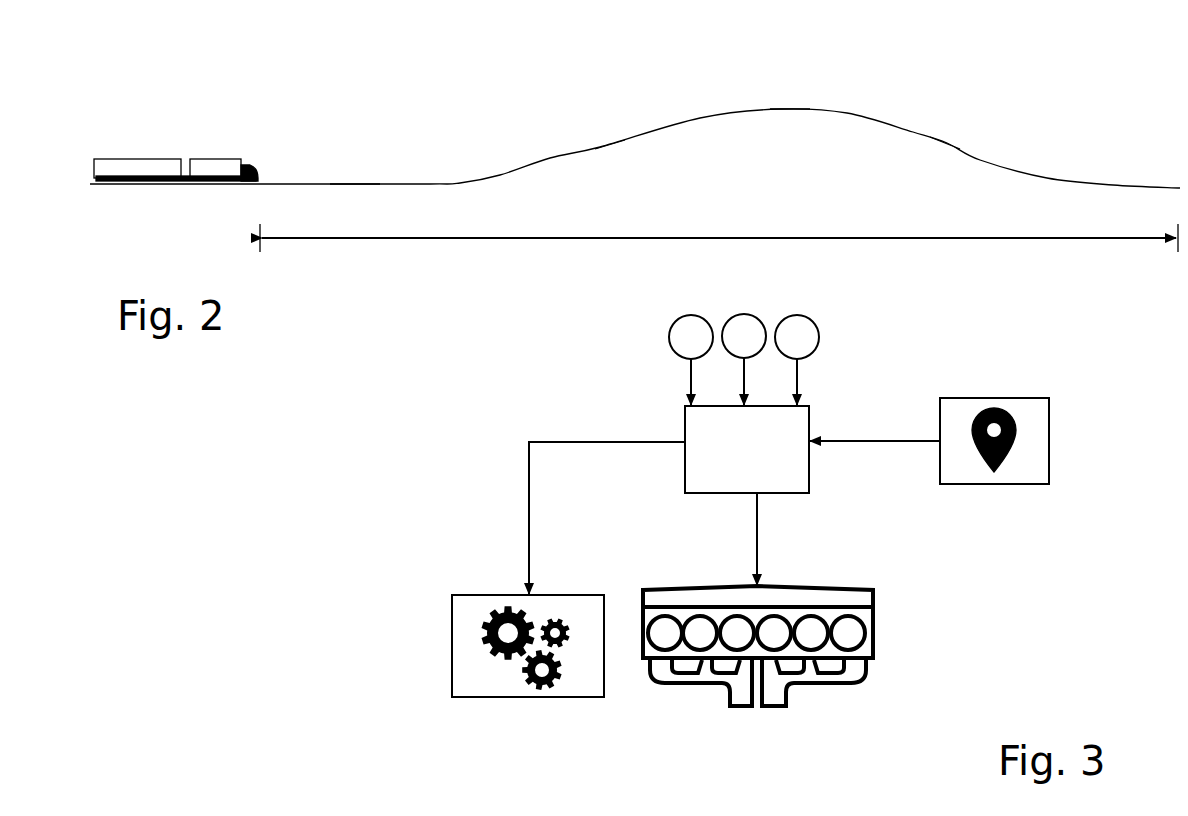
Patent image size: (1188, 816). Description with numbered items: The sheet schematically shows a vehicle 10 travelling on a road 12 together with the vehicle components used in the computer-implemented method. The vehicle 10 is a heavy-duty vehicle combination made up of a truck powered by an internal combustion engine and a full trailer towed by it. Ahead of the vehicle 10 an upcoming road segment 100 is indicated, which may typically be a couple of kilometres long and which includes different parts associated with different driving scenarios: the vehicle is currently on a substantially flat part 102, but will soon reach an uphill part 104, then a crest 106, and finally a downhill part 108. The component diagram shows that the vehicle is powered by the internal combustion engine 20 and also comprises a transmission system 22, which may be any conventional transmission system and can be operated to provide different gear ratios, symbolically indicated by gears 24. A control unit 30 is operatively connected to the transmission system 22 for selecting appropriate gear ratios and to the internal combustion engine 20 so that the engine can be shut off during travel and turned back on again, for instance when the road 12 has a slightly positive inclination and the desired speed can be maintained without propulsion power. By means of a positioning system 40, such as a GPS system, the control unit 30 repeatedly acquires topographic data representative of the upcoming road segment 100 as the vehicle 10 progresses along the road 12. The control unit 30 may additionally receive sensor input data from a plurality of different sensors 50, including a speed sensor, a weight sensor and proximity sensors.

In FIG. 2, the vehicle 10 is at (236, 155).
In FIG. 2, the road 12 is at (512, 88).
In FIG. 2, the upcoming road segment 100 is at (719, 231).
In FIG. 2, the flat part 102 is at (348, 183).
In FIG. 2, the uphill part 104 is at (610, 145).
In FIG. 2, the crest 106 is at (788, 109).
In FIG. 2, the downhill part 108 is at (945, 140).
In FIG. 3, the internal combustion engine 20 is at (873, 622).
In FIG. 3, the transmission system 22 is at (452, 615).
In FIG. 3, the gears 24 is at (485, 638).
In FIG. 3, the control unit 30 is at (766, 466).
In FIG. 3, the positioning system 40 is at (995, 486).
In FIG. 3, the sensors 50 is at (788, 318).